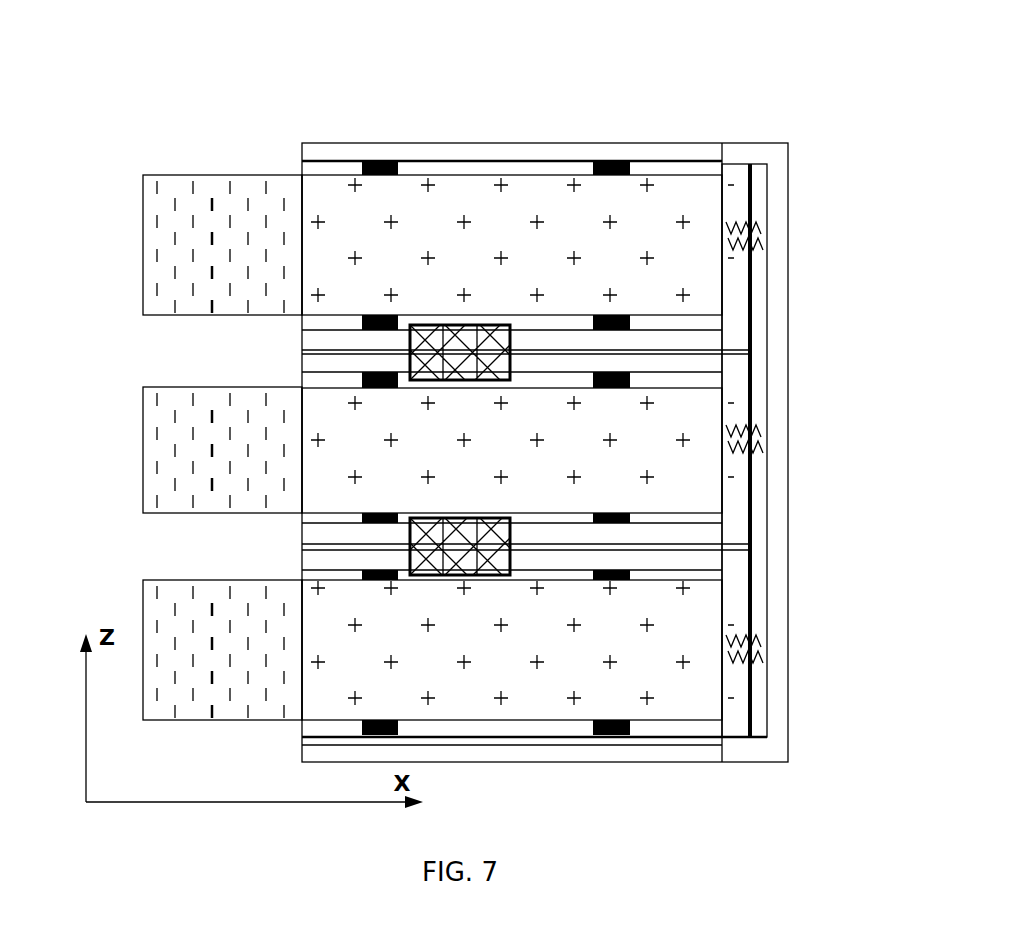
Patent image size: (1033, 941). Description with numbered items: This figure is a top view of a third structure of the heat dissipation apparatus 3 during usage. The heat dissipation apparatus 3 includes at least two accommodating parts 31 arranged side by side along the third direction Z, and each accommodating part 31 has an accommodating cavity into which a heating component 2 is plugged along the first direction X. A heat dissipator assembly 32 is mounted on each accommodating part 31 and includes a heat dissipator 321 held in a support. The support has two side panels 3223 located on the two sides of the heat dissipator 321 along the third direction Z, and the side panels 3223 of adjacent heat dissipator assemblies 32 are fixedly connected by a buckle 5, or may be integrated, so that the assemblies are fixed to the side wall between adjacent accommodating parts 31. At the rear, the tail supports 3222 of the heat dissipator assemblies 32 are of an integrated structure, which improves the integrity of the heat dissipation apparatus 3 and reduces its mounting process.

The heating component 2 is at (182, 203).
The heat dissipation apparatus 3 is at (787, 98).
The accommodating part 31 is at (510, 160).
The heat dissipator assembly 32 is at (650, 177).
The heat dissipator 321 is at (438, 215).
The tail support 3222 is at (778, 170).
The side panel 3223 is at (327, 345).
The buckle 5 is at (408, 363).